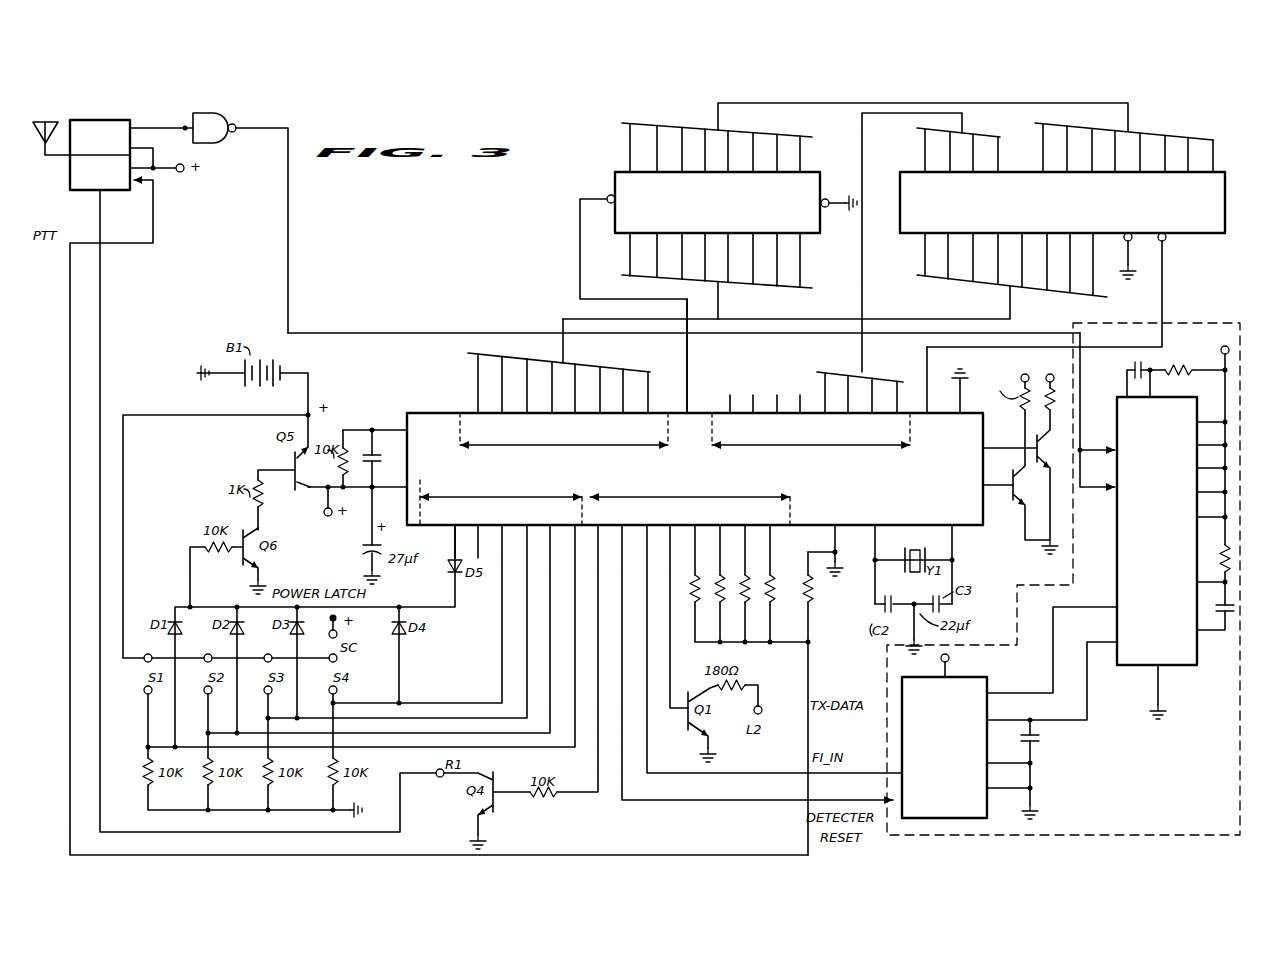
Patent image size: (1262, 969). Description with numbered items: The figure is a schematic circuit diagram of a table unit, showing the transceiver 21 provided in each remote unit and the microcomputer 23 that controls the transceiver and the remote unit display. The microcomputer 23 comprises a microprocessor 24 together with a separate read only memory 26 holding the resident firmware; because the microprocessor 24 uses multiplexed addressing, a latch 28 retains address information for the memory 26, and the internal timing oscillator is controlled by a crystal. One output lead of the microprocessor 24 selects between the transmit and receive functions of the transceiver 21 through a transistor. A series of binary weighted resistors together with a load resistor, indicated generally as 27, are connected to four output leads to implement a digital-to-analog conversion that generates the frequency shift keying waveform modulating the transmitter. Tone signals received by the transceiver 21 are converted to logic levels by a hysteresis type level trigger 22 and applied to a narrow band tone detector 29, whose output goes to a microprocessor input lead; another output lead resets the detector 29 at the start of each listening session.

The transceiver 21 is at (97, 123).
The hysteresis type level trigger 22 is at (224, 121).
The microcomputer 23 is at (541, 264).
The microprocessor 24 is at (697, 412).
The read only memory 26 is at (899, 242).
The group of resistors 27 is at (818, 652).
The latch 28 is at (854, 258).
The narrow band tone detector 29 is at (1201, 322).